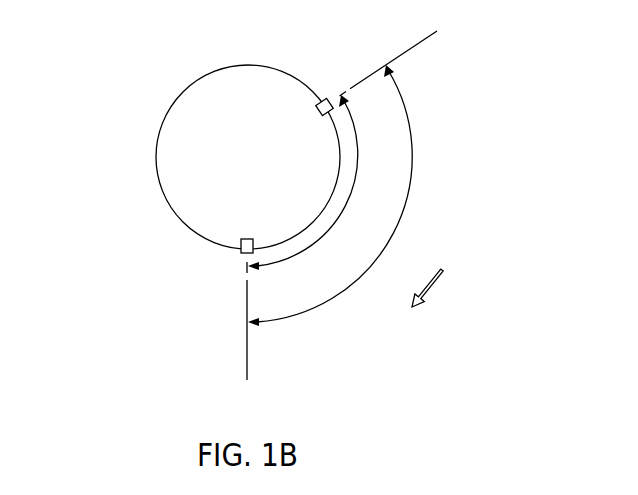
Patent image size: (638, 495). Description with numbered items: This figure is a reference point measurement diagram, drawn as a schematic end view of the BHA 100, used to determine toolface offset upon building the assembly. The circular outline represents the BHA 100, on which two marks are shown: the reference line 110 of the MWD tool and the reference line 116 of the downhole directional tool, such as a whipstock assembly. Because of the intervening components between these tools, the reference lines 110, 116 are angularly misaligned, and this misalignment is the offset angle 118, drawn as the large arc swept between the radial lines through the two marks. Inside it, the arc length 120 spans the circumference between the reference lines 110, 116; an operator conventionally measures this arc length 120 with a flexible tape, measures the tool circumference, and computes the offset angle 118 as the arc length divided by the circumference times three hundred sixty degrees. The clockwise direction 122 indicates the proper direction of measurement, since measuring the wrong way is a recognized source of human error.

The BHA 100 is at (98, 31).
The reference line 110 is at (325, 98).
The reference line 116 is at (240, 247).
The offset angle 118 is at (412, 133).
The arc length 120 is at (358, 174).
The clockwise direction 122 is at (430, 287).